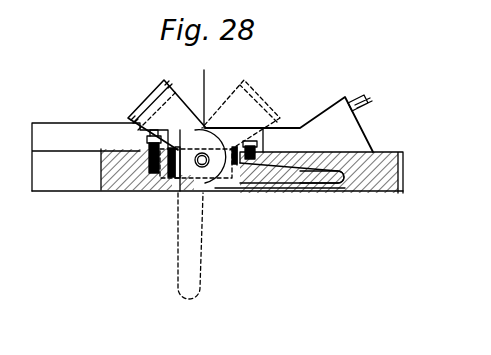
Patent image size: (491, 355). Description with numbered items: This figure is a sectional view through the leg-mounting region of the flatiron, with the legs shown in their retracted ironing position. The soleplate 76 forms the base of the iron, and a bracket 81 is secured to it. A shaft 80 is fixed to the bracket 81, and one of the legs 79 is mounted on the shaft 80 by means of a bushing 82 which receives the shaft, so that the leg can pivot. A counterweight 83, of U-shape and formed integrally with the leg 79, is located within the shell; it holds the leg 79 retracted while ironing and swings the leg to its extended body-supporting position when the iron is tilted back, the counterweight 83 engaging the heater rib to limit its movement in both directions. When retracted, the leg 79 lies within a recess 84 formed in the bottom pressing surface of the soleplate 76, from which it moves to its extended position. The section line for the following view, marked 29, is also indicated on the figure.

The lever 29 is at (205, 70).
The soleplate 76 is at (368, 194).
The legs 79 is at (293, 184).
The shafts 80 is at (207, 166).
The brackets 81 is at (145, 146).
The bushings 82 is at (181, 187).
The counterweights 83 is at (147, 101).
The recesses 84 is at (319, 173).